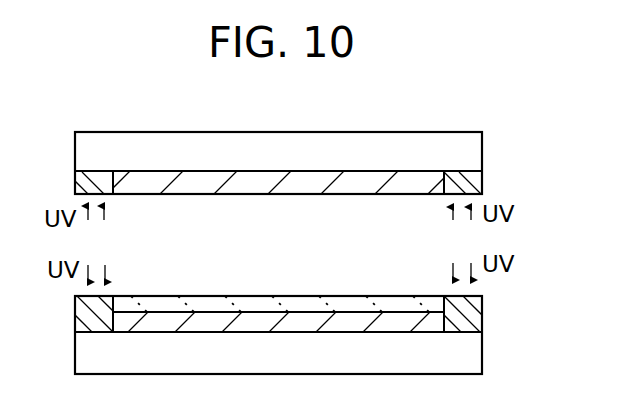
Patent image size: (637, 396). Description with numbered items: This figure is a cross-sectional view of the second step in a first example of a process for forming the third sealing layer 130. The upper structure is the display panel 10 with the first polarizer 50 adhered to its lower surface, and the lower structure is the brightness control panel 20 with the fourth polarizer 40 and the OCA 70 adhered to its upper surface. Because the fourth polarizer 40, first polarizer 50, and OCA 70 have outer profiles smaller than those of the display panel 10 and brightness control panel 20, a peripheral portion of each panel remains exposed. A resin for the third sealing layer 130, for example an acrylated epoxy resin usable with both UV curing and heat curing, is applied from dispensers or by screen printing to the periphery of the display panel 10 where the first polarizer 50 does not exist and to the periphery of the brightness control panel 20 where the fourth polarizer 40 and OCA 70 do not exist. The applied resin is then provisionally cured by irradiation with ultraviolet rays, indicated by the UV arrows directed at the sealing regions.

The display panel 10 is at (467, 150).
The brightness control panel 20 is at (463, 355).
The fourth polarizer 40 is at (267, 322).
The first polarizer 50 is at (308, 187).
The OCA 70 is at (354, 303).
The third sealing layer 130 is at (475, 183).